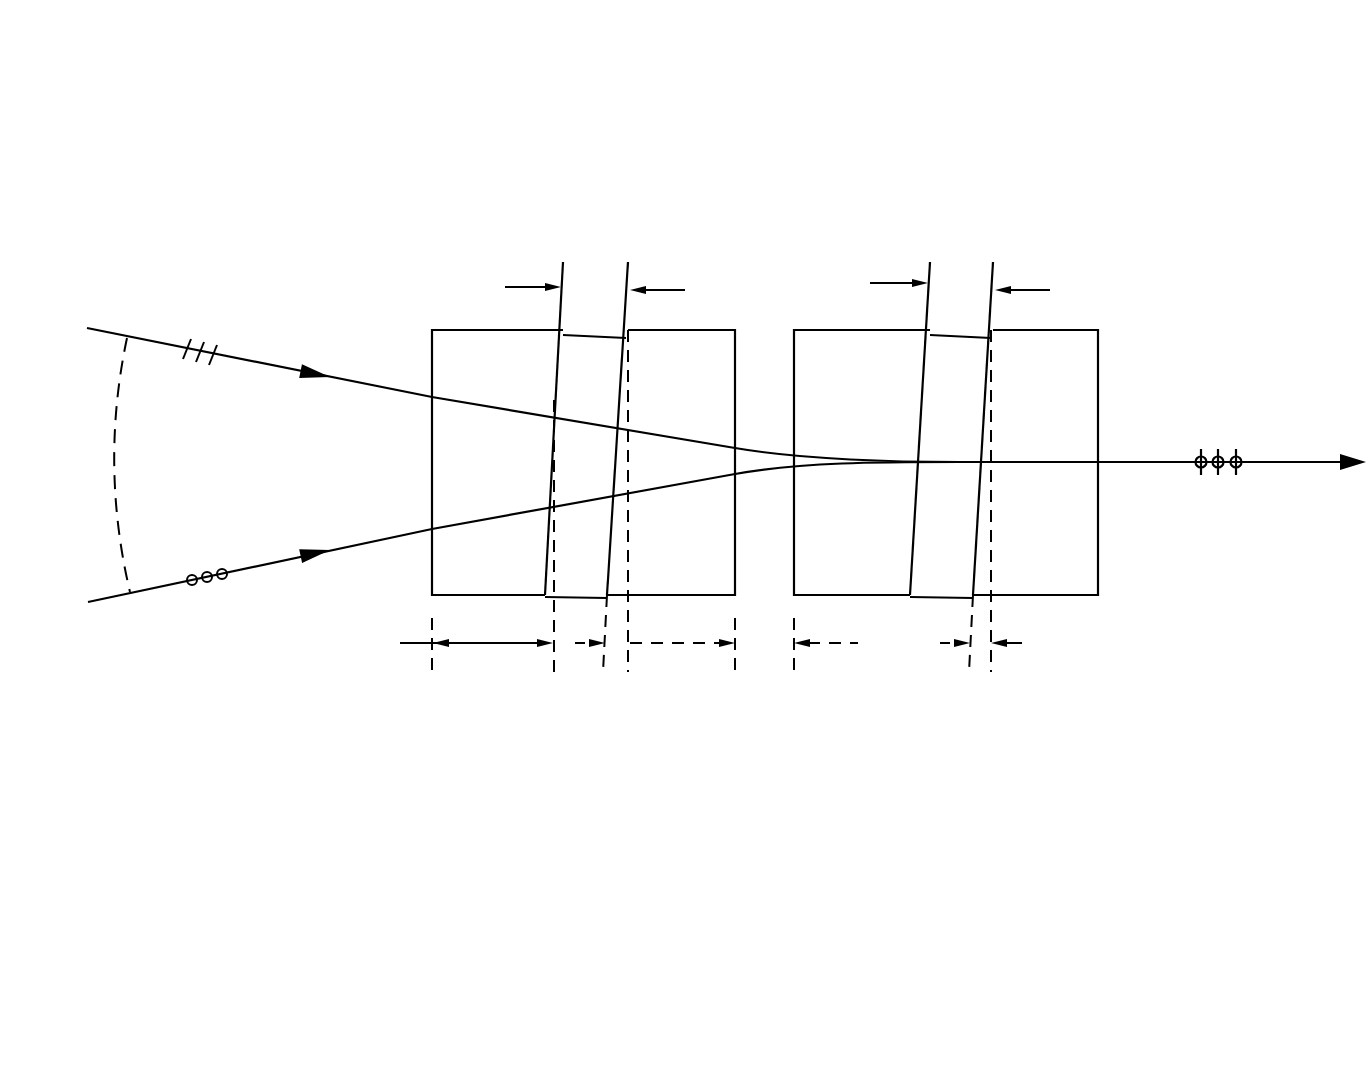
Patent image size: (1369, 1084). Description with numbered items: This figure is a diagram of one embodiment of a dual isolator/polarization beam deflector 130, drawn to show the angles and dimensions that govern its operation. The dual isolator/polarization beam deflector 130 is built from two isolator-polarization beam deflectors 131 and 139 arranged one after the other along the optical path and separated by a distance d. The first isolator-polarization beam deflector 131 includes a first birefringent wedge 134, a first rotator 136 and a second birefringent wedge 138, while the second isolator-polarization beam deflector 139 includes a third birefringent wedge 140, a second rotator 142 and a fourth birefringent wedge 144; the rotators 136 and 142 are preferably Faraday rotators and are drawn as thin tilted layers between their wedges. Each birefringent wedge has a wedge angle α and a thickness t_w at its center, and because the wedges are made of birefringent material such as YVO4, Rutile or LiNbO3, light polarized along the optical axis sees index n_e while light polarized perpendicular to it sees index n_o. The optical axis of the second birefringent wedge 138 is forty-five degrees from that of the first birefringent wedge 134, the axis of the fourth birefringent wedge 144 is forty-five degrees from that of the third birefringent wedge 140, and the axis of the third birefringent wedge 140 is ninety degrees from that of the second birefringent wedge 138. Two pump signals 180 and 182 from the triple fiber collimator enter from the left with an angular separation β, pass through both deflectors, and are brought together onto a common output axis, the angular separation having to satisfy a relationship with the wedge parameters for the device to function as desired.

The dual isolator/polarization beam deflector 130 is at (722, 173).
The first isolator-polarization beam deflector 131 is at (579, 517).
The first birefringent wedge 134 is at (431, 506).
The first rotator 136 is at (573, 333).
The second birefringent wedge 138 is at (681, 330).
The second isolator-polarization beam deflector 139 is at (976, 517).
The third birefringent wedge 140 is at (828, 595).
The second rotator 142 is at (940, 333).
The fourth birefringent wedge 144 is at (1045, 330).
The pump signal 180 is at (155, 342).
The pump signal 182 is at (168, 590).